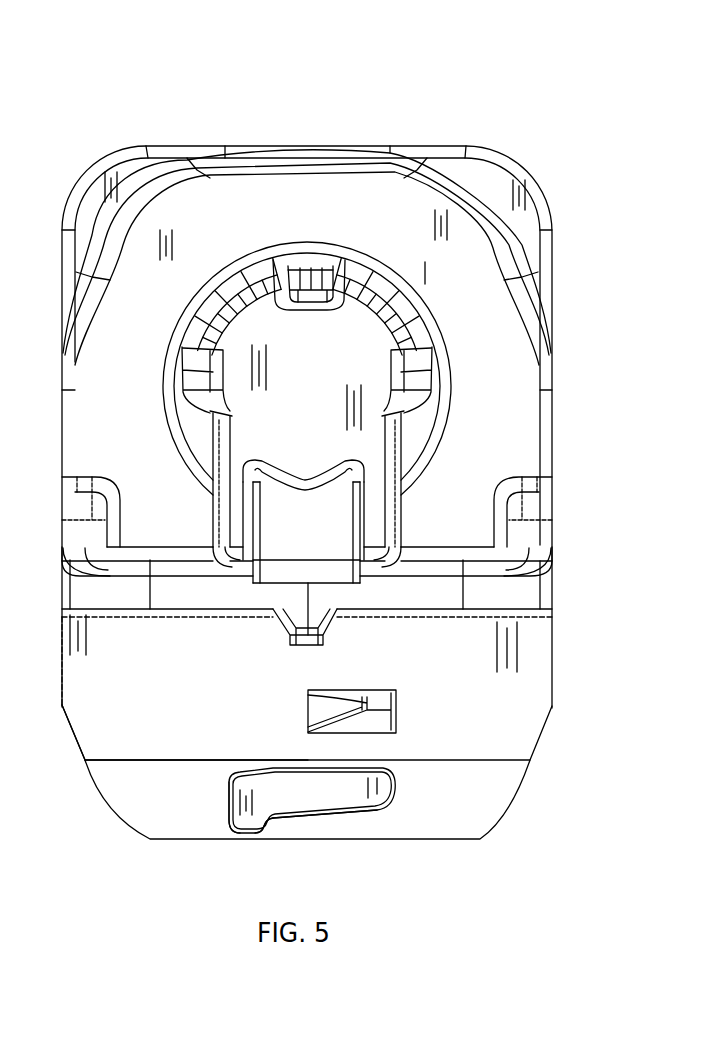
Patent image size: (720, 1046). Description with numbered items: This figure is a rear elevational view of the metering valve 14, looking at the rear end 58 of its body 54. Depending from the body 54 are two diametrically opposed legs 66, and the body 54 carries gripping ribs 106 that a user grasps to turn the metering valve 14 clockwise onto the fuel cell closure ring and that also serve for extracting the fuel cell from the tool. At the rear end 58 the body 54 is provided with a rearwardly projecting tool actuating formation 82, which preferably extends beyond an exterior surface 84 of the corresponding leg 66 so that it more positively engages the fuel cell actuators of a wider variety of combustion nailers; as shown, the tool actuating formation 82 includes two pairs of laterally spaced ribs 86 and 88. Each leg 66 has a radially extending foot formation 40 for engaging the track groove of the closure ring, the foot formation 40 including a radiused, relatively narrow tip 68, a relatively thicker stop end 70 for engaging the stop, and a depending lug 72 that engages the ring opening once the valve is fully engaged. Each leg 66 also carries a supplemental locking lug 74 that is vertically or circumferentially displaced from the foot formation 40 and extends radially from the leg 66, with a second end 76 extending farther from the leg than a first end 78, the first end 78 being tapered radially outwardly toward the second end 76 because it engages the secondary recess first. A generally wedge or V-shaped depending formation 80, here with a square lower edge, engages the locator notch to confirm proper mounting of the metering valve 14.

The metering valve 14 is at (483, 149).
The body 54 is at (260, 187).
The rear end 58 is at (548, 352).
The gripping ribs 106 is at (353, 270).
The ribs 86 is at (84, 547).
The tool actuating formation 82 is at (175, 577).
The ribs 88 is at (240, 550).
The depending formation 80 is at (307, 637).
The leg 66 is at (530, 652).
The exterior surface 84 is at (132, 661).
The second end 76 is at (396, 710).
The supplemental locking lug 74 is at (0, 718).
The first end 78 is at (300, 710).
The tip 68 is at (397, 780).
The stop end 70 is at (228, 803).
The depending lug 72 is at (250, 833).
The foot formation 40 is at (340, 793).